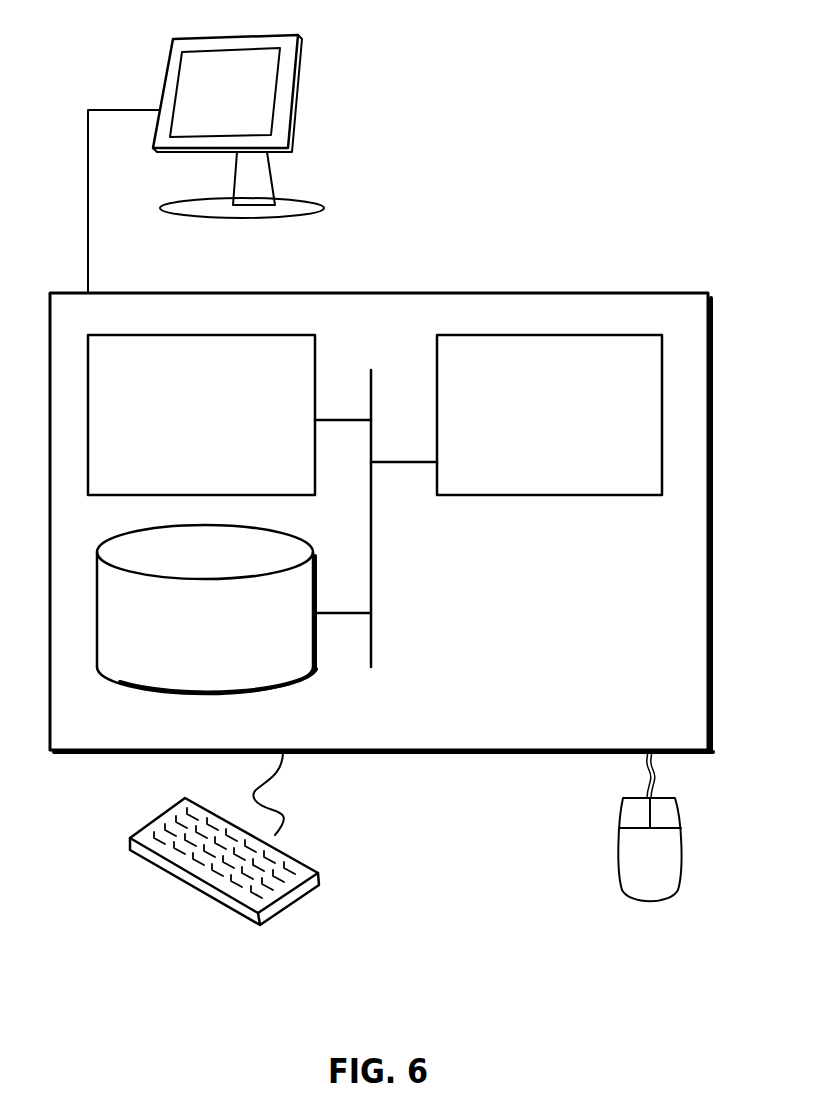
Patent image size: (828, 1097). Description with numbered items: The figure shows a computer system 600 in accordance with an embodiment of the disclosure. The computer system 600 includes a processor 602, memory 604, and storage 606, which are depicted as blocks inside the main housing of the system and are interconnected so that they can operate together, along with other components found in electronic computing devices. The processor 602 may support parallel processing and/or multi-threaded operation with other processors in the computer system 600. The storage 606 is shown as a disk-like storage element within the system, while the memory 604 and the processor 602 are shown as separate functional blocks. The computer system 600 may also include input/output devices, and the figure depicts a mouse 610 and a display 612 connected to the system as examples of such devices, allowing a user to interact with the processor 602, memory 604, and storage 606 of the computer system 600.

The computer system 600 is at (425, 260).
The processor 602 is at (530, 426).
The memory 604 is at (182, 426).
The storage 606 is at (187, 637).
The mouse 610 is at (629, 869).
The display 612 is at (206, 164).